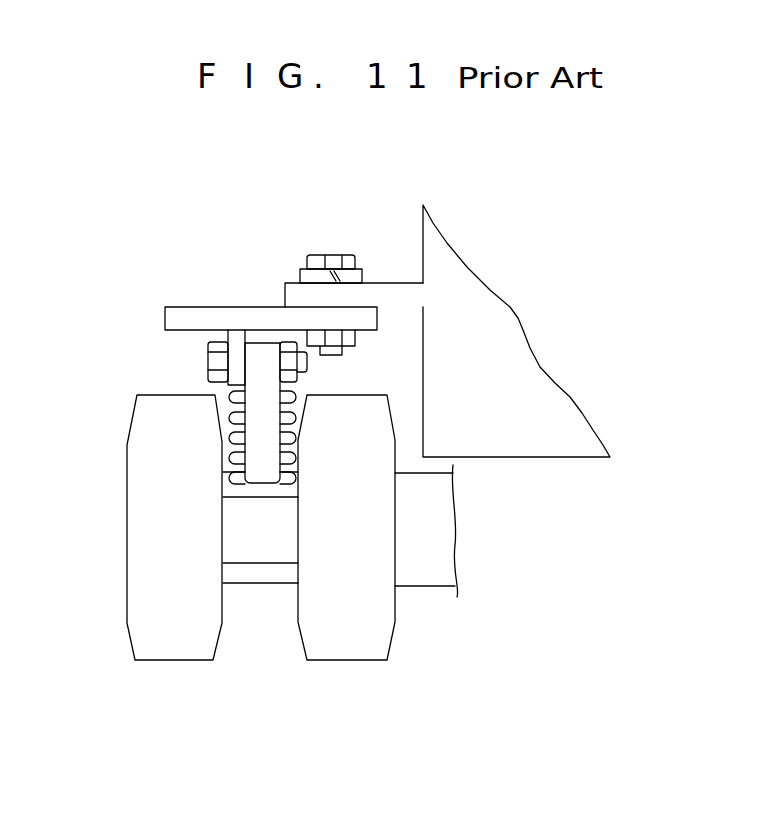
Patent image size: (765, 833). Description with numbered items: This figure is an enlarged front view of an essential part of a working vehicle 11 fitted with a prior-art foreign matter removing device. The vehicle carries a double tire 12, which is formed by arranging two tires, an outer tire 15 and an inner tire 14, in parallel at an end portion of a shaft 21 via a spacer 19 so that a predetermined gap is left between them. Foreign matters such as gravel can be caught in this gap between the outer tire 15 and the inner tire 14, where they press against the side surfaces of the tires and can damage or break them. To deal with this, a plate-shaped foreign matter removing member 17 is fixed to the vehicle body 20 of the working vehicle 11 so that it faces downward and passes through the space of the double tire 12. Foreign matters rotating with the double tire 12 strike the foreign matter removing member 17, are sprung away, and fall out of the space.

The working vehicle 11 is at (518, 263).
The double tire 12 is at (256, 489).
The inner tire 14 is at (325, 632).
The outer tire 15 is at (153, 637).
The foreign matter removing member 17 is at (259, 407).
The spacer 19 is at (260, 613).
The vehicle body 20 is at (519, 432).
The shaft 21 is at (277, 533).